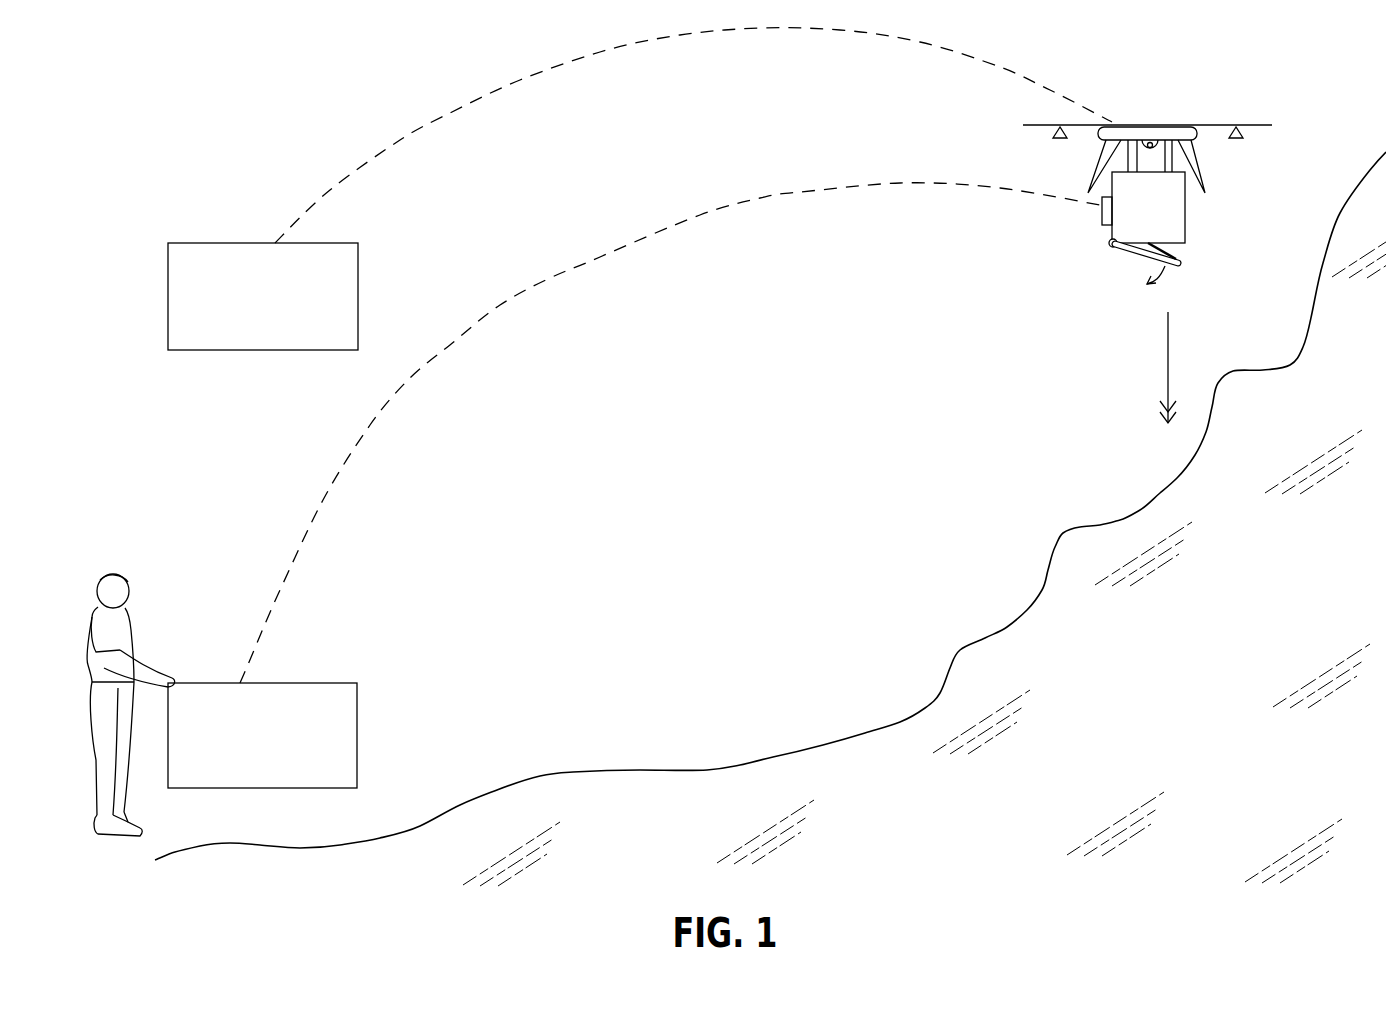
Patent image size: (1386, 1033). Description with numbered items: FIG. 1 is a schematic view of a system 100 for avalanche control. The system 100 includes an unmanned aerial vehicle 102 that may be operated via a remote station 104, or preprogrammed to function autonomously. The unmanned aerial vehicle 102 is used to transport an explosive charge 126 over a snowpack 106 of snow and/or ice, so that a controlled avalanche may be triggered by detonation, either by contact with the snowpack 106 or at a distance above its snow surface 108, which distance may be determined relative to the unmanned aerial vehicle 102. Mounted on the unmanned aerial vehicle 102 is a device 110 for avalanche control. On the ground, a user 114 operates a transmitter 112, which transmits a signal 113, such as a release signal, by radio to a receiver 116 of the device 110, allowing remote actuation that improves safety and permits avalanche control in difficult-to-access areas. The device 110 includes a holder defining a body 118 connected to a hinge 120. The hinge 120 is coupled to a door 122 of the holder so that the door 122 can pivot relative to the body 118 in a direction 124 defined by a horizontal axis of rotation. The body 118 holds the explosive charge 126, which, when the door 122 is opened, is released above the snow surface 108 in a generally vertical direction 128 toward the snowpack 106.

The system 100 is at (196, 94).
The unmanned aerial vehicle 102 is at (1150, 125).
The remote station 104 is at (246, 323).
The snowpack 106 is at (770, 519).
The snow surface 108 is at (1160, 492).
The device for avalanche control 110 is at (1212, 290).
The transmitter 112 is at (245, 762).
The signal 113 is at (665, 233).
The user 114 is at (115, 575).
The receiver 116 is at (1100, 211).
The body 118 is at (1186, 222).
The hinge 120 is at (1109, 243).
The door 122 is at (1118, 254).
The direction 124 is at (1150, 288).
The explosive charge 126 is at (1180, 256).
The generally vertical direction 128 is at (1165, 392).